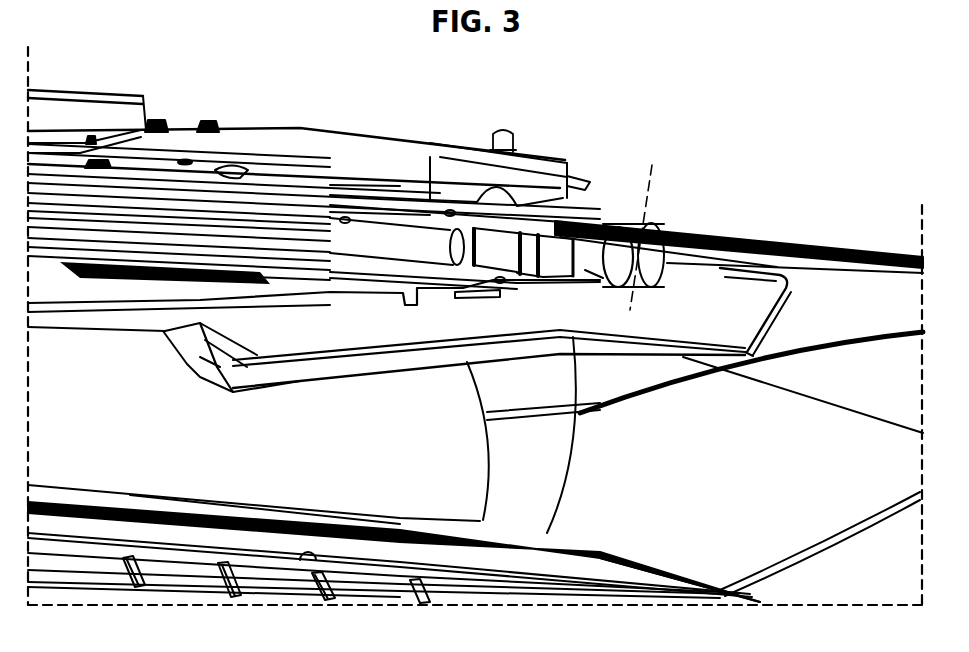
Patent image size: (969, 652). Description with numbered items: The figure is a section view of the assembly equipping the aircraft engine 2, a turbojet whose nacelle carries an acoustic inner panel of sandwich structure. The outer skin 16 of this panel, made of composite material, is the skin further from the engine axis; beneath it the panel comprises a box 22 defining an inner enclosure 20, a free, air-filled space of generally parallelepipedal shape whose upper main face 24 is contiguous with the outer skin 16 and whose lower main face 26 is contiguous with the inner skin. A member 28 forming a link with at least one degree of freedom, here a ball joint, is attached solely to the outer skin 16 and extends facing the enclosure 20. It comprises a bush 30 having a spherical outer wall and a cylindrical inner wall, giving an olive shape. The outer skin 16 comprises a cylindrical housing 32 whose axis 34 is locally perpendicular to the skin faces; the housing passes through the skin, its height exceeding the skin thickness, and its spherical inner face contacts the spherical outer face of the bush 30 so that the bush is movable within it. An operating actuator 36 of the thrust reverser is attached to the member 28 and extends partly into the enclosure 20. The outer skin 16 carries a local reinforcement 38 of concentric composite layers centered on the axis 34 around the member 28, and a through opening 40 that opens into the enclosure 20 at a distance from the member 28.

The aircraft engine 2 is at (622, 103).
The outer skin 16 is at (757, 260).
The inner enclosure 20 is at (696, 304).
The box 22 is at (200, 358).
The upper main face 24 is at (269, 292).
The lower main face 26 is at (310, 390).
The member forming a link 28 is at (677, 283).
The bush 30 is at (659, 257).
The cylindrical housing 32 is at (608, 248).
The axis 34 is at (652, 187).
The operating actuator 36 is at (137, 177).
The local reinforcement 38 is at (186, 282).
The through opening 40 is at (308, 302).